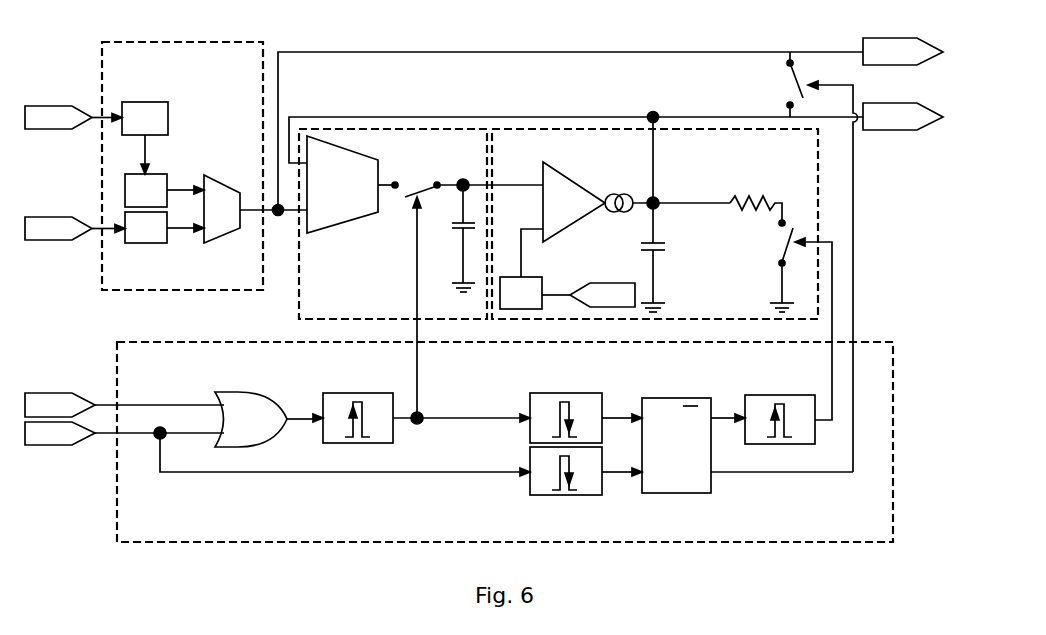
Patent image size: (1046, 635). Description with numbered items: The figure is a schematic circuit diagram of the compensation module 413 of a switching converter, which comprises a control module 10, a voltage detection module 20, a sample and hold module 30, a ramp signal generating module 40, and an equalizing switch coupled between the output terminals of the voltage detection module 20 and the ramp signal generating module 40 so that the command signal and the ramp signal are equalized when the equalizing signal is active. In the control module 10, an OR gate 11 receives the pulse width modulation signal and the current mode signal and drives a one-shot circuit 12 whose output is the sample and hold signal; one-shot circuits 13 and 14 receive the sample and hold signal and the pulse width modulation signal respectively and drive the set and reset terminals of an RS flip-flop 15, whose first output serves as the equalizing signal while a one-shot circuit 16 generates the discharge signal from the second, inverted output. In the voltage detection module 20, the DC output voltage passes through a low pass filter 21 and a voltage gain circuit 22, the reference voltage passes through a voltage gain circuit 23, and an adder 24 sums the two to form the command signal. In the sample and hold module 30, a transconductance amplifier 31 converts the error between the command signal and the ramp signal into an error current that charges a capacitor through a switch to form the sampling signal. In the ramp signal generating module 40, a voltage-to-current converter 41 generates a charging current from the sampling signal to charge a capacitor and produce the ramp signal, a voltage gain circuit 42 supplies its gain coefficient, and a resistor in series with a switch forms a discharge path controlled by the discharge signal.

The control module 10 is at (166, 367).
The OR gate 11 is at (255, 393).
The one-shot circuit 12 is at (337, 393).
The one-shot circuit 13 is at (558, 393).
The one-shot circuit 14 is at (563, 495).
The RS flip-flop 15 is at (672, 398).
The one-shot circuit 16 is at (777, 444).
The voltage detection module 20 is at (138, 65).
The low pass filter 21 is at (152, 102).
The voltage gain circuit 22 is at (167, 174).
The voltage gain circuit 23 is at (160, 243).
The adder 24 is at (220, 237).
The sample and hold module 30 is at (325, 292).
The transconductance amplifier 31 is at (366, 218).
The ramp signal generating module 40 is at (532, 152).
The voltage-to-current converter 41 is at (577, 185).
The voltage gain circuit 42 is at (543, 287).
The compensation module 413 is at (166, 577).